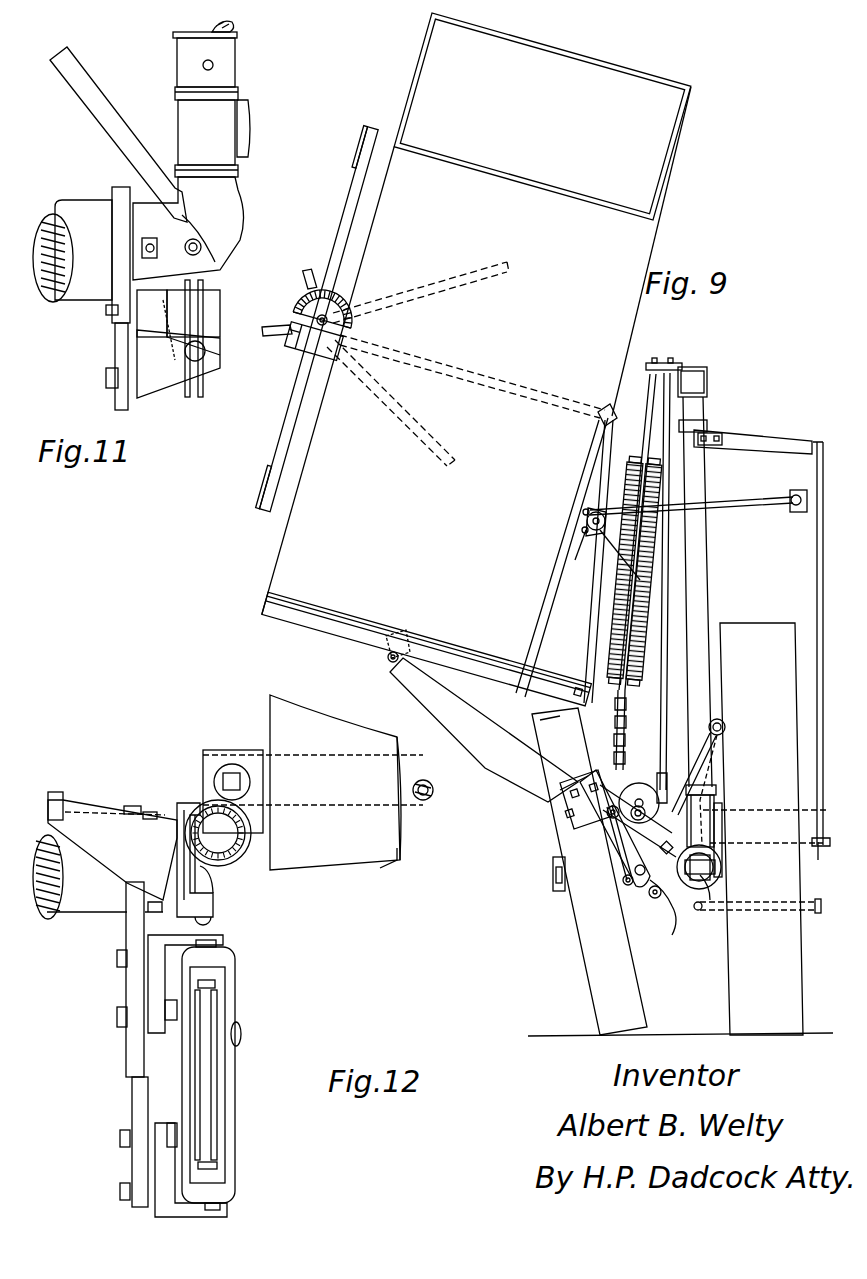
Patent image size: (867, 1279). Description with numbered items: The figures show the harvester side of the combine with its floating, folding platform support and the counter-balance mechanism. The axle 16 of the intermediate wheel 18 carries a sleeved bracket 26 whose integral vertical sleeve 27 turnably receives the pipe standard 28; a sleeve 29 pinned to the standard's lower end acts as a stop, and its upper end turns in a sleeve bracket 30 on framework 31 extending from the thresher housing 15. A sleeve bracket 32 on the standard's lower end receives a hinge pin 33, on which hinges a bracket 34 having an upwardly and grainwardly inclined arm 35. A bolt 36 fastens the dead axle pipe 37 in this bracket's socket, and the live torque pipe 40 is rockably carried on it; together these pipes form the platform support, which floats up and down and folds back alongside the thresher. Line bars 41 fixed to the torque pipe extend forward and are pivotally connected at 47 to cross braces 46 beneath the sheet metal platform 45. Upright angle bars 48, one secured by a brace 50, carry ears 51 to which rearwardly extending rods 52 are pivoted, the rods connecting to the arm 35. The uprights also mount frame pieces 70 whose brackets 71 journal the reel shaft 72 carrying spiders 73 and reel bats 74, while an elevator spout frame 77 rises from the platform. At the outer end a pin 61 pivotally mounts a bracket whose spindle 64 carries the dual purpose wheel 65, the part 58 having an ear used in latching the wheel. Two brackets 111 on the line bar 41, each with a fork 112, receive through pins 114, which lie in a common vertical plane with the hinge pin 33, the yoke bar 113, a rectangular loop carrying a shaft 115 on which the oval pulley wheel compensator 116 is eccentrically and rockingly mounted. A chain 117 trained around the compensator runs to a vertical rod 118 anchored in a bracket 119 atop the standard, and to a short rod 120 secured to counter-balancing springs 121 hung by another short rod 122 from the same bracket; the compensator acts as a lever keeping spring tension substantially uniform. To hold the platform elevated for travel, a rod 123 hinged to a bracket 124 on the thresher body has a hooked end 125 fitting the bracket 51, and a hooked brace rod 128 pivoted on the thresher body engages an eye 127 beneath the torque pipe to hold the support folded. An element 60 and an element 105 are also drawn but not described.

In FIG. 9, the thresher housing 15 is at (816, 462).
In FIG. 9, the axle 16 is at (812, 846).
In FIG. 12, the axle 16 is at (416, 806).
In FIG. 9, the intermediate wheel 18 is at (738, 974).
In FIG. 12, the intermediate wheel 18 is at (388, 850).
In FIG. 9, the sleeved bracket 26 is at (716, 826).
In FIG. 11, the sleeved bracket 26 is at (250, 110).
In FIG. 12, the sleeved bracket 26 is at (223, 752).
In FIG. 9, the vertically disposed sleeve 27 is at (718, 848).
In FIG. 11, the vertically disposed sleeve 27 is at (178, 118).
In FIG. 9, the standard 28 is at (706, 404).
In FIG. 11, the standard 28 is at (236, 28).
In FIG. 12, the standard 28 is at (238, 818).
In FIG. 9, the sleeve 29 is at (718, 790).
In FIG. 11, the sleeve 29 is at (177, 64).
In FIG. 12, the sleeve 29 is at (254, 838).
In FIG. 9, the sleeve bracket 30 is at (712, 430).
In FIG. 9, the framework 31 is at (782, 441).
In FIG. 9, the sleeve bracket 32 is at (700, 905).
In FIG. 11, the sleeve bracket 32 is at (220, 226).
In FIG. 12, the sleeve bracket 32 is at (216, 896).
In FIG. 11, the hinge pin 33 is at (204, 250).
In FIG. 12, the hinge pin 33 is at (215, 916).
In FIG. 9, the bracket 34 is at (722, 870).
In FIG. 11, the bracket 34 is at (182, 230).
In FIG. 12, the bracket 34 is at (183, 803).
In FIG. 9, the arm 35 is at (722, 738).
In FIG. 11, the arm 35 is at (80, 82).
In FIG. 12, the arm 35 is at (94, 805).
In FIG. 11, the bolt 36 is at (158, 254).
In FIG. 11, the axle pipe 37 is at (52, 272).
In FIG. 12, the axle pipe 37 is at (46, 922).
In FIG. 11, the torque pipe 40 is at (80, 203).
In FIG. 12, the torque pipe 40 is at (90, 913).
In FIG. 9, the line bars 41 is at (515, 782).
In FIG. 11, the line bars 41 is at (98, 304).
In FIG. 12, the line bars 41 is at (136, 1098).
In FIG. 9, the sheet metal platform 45 is at (307, 614).
In FIG. 9, the cross braces 46 is at (348, 634).
In FIG. 9, the pivotal connection 47 is at (390, 664).
In FIG. 9, the upright angle bars 48 is at (545, 646).
In FIG. 9, the brace 50 is at (573, 615).
In FIG. 9, the ears 51 is at (583, 526).
In FIG. 9, the rods 52 is at (620, 565).
In FIG. 9, the part 58 is at (672, 908).
In FIG. 9, the brace 60 is at (680, 872).
In FIG. 9, the pin 61 is at (622, 884).
In FIG. 9, the spindle 64 is at (556, 890).
In FIG. 9, the dual purpose wheel 65 is at (580, 908).
In FIG. 9, the frame pieces 70 is at (598, 420).
In FIG. 9, the brackets 71 is at (325, 360).
In FIG. 9, the reel shaft 72 is at (340, 324).
In FIG. 9, the spiders 73 is at (273, 458).
In FIG. 9, the reel bats 74 is at (262, 500).
In FIG. 9, the elevator spout frame 77 is at (648, 240).
In FIG. 9, the dial 105 is at (332, 296).
In FIG. 9, the brackets 111 is at (577, 838).
In FIG. 11, the brackets 111 is at (152, 336).
In FIG. 12, the brackets 111 is at (158, 966).
In FIG. 9, the fork 112 is at (585, 812).
In FIG. 11, the fork 112 is at (206, 350).
In FIG. 12, the fork 112 is at (224, 938).
In FIG. 9, the yoke bar 113 is at (622, 821).
In FIG. 11, the yoke bar 113 is at (214, 380).
In FIG. 12, the yoke bar 113 is at (236, 1084).
In FIG. 9, the pins 114 is at (562, 797).
In FIG. 11, the pins 114 is at (210, 362).
In FIG. 12, the pins 114 is at (213, 985).
In FIG. 9, the shaft 115 is at (600, 842).
In FIG. 11, the shaft 115 is at (207, 292).
In FIG. 12, the shaft 115 is at (230, 1030).
In FIG. 9, the oval-shaped pulley wheel compensator 116 is at (637, 783).
In FIG. 11, the oval-shaped pulley wheel compensator 116 is at (203, 304).
In FIG. 12, the oval-shaped pulley wheel compensator 116 is at (212, 1065).
In FIG. 9, the chain 117 is at (610, 744).
In FIG. 9, the rod 118 is at (670, 582).
In FIG. 9, the bracket 119 is at (662, 363).
In FIG. 9, the short rod 120 is at (553, 729).
In FIG. 9, the counter-balancing springs 121 is at (640, 603).
In FIG. 9, the short rod 122 is at (700, 445).
In FIG. 9, the rod 123 is at (776, 508).
In FIG. 9, the bracket 124 is at (800, 514).
In FIG. 9, the hooked end 125 is at (585, 516).
In FIG. 9, the eye 127 is at (720, 915).
In FIG. 9, the hooked brace rod 128 is at (808, 912).